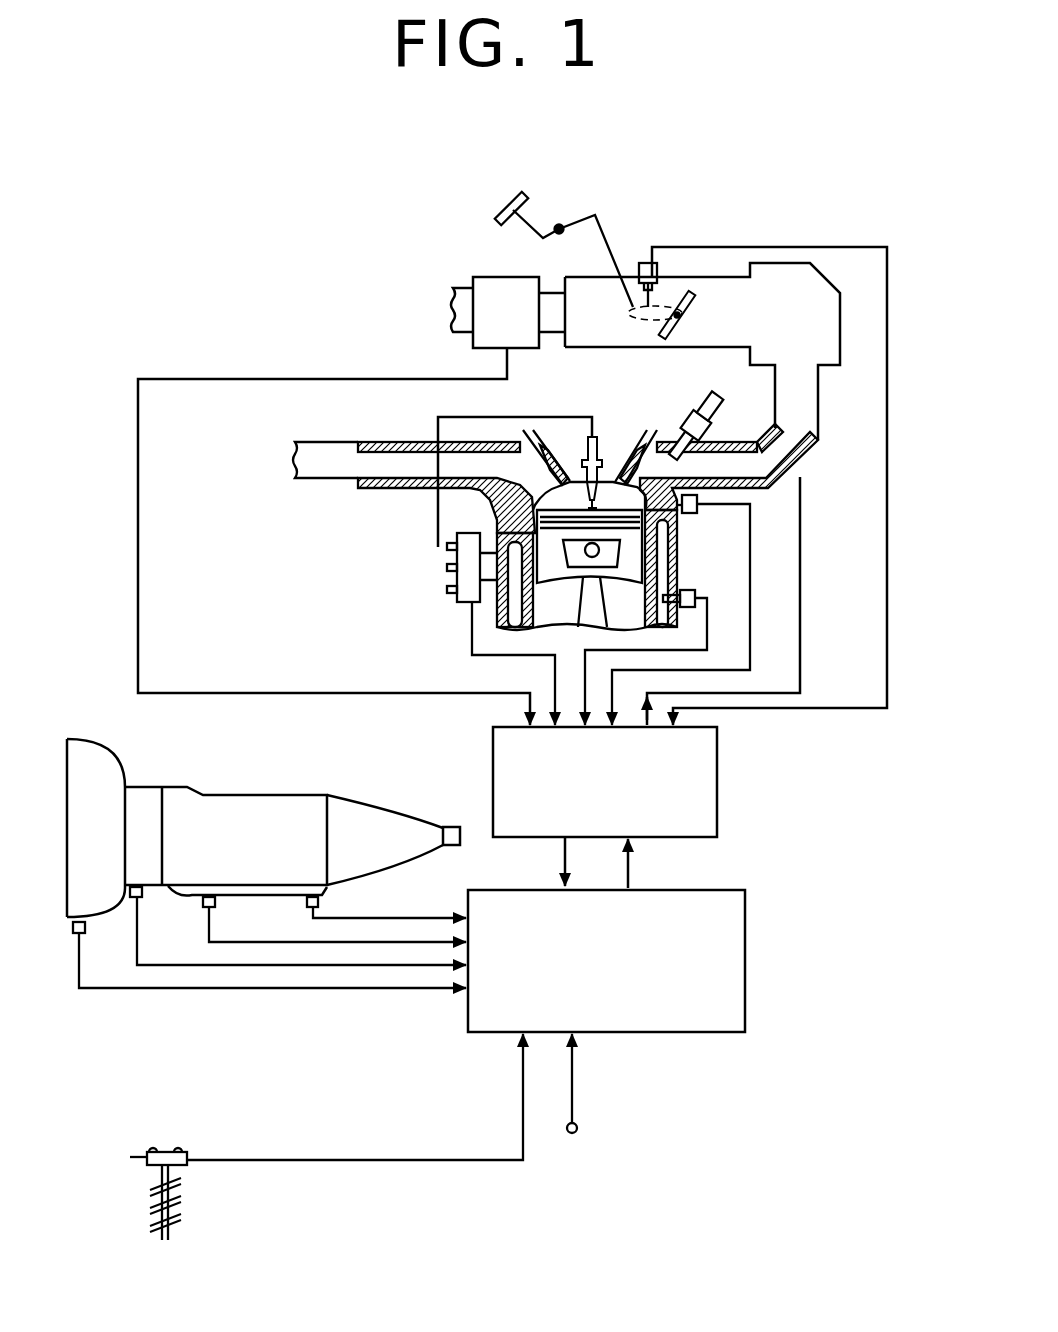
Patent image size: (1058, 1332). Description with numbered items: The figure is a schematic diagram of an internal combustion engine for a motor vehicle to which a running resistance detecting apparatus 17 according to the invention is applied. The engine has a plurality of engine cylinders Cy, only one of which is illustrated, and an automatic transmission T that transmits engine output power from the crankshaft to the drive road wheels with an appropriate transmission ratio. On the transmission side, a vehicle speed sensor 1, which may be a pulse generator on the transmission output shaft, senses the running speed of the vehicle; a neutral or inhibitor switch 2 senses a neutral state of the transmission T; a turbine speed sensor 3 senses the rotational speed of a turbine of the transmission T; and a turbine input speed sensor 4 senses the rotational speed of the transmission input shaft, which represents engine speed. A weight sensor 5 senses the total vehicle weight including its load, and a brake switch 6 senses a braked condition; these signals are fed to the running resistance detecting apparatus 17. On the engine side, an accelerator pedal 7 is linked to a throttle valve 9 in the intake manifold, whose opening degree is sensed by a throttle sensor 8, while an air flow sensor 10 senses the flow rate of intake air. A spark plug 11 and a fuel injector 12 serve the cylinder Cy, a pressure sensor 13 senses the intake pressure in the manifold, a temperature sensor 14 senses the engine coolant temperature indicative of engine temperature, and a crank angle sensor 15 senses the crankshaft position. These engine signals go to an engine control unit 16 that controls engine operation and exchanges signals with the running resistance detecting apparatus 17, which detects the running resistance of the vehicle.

The vehicle speed sensor 1 is at (320, 902).
The neutral or inhibitor switch 2 is at (218, 904).
The turbine speed sensor 3 is at (144, 895).
The turbine input speed sensor 4 is at (84, 930).
The weight sensor 5 is at (326, 1137).
The brake switch 6 is at (578, 1128).
The accelerator pedal 7 is at (520, 196).
The throttle sensor 8 is at (641, 262).
The throttle valve 9 is at (667, 340).
The air flow sensor 10 is at (480, 277).
The spark plug 11 is at (603, 438).
The fuel injector 12 is at (687, 426).
The pressure sensor 13 is at (698, 515).
The temperature sensor 14 is at (684, 583).
The crank angle sensor 15 is at (456, 602).
The engine control unit 16 is at (717, 777).
The running resistance detecting apparatus 17 is at (745, 960).
The automatic transmission T is at (272, 781).
The engine cylinder Cy is at (492, 528).